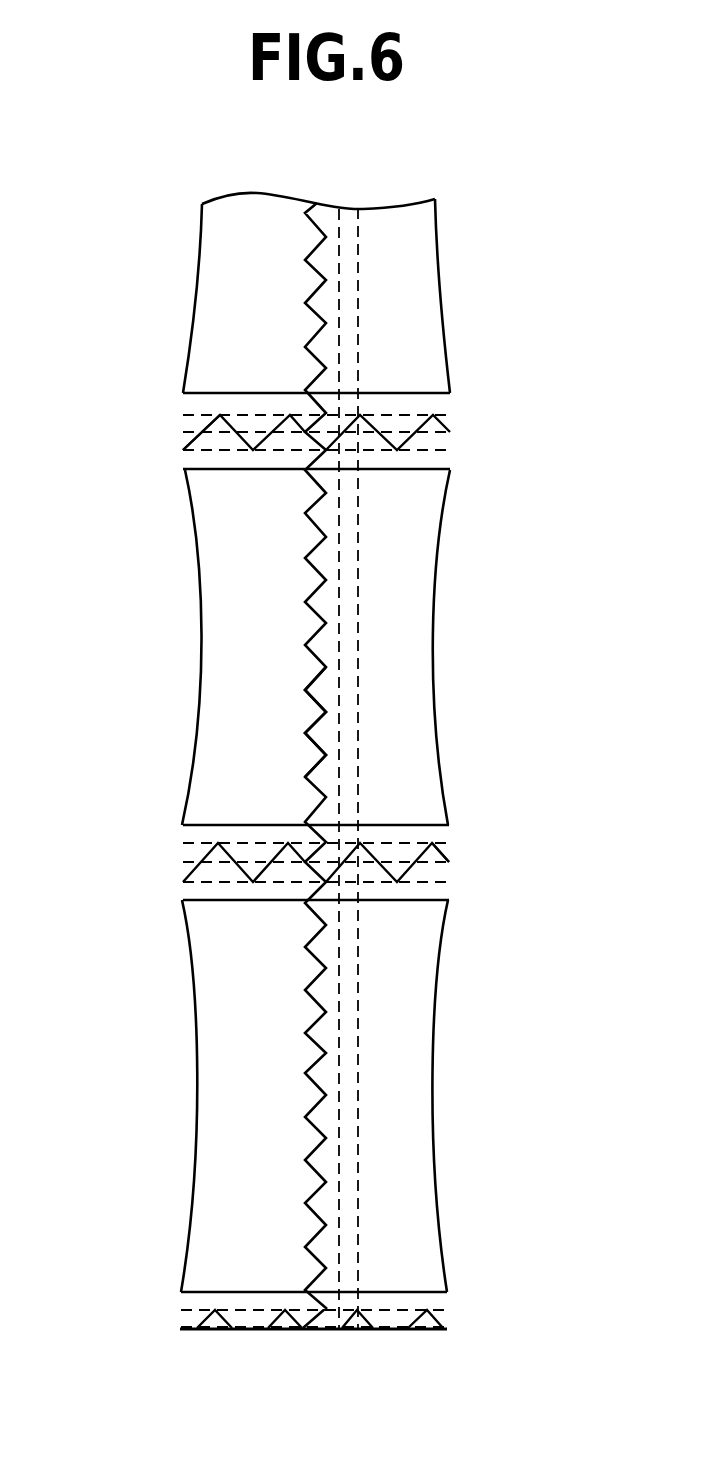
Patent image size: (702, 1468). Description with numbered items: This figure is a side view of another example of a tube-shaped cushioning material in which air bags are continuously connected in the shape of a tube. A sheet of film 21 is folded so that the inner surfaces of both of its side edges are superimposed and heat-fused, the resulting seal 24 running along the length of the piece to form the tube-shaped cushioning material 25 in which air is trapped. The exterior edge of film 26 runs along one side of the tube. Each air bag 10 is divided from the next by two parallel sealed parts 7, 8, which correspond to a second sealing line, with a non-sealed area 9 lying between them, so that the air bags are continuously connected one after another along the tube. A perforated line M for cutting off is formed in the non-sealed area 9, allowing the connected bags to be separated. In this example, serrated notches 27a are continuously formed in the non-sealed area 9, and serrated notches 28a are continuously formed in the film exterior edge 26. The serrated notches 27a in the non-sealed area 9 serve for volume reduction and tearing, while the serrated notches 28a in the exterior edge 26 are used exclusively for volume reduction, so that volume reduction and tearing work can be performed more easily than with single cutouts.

The sealed part 7 is at (402, 397).
The sealed part 8 is at (413, 460).
The non-sealed area 9 is at (447, 417).
The air bag 10 is at (410, 723).
The sheet of film 21 is at (430, 550).
The heat-fused seal 24 is at (348, 652).
The tube-shaped cushioning material 25 is at (413, 312).
The exterior edge of film 26 is at (310, 733).
The serrated notches 27a is at (240, 440).
The serrated notches 28a is at (313, 632).
The perforated line M is at (198, 436).